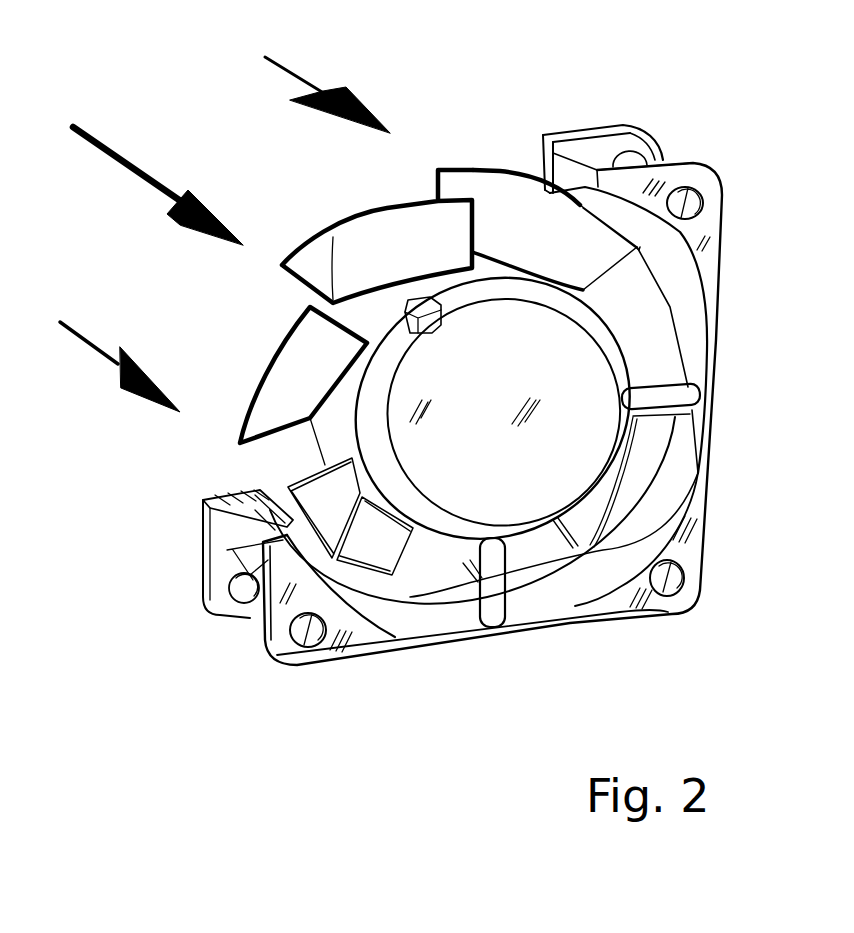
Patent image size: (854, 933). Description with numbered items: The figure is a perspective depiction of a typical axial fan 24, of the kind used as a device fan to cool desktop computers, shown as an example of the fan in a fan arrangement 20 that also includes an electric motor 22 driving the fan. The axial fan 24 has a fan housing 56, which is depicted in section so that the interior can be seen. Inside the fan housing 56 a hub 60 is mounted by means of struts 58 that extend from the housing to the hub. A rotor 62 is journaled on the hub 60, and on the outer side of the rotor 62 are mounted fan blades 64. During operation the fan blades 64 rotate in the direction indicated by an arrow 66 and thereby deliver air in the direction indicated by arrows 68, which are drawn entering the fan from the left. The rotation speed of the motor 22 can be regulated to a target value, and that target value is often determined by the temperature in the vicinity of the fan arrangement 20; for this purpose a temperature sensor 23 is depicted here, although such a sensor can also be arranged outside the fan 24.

The fan arrangement 20 is at (684, 119).
The electric motor 22 is at (503, 369).
The temperature sensor 23 is at (428, 322).
The fan 24 is at (497, 212).
The fan housing 56 is at (592, 98).
The struts 58 is at (660, 392).
The hub 60 is at (460, 467).
The rotor 62 is at (338, 430).
The fan blades 64 is at (447, 186).
The arrow 66 is at (347, 430).
The arrows 68 is at (296, 84).